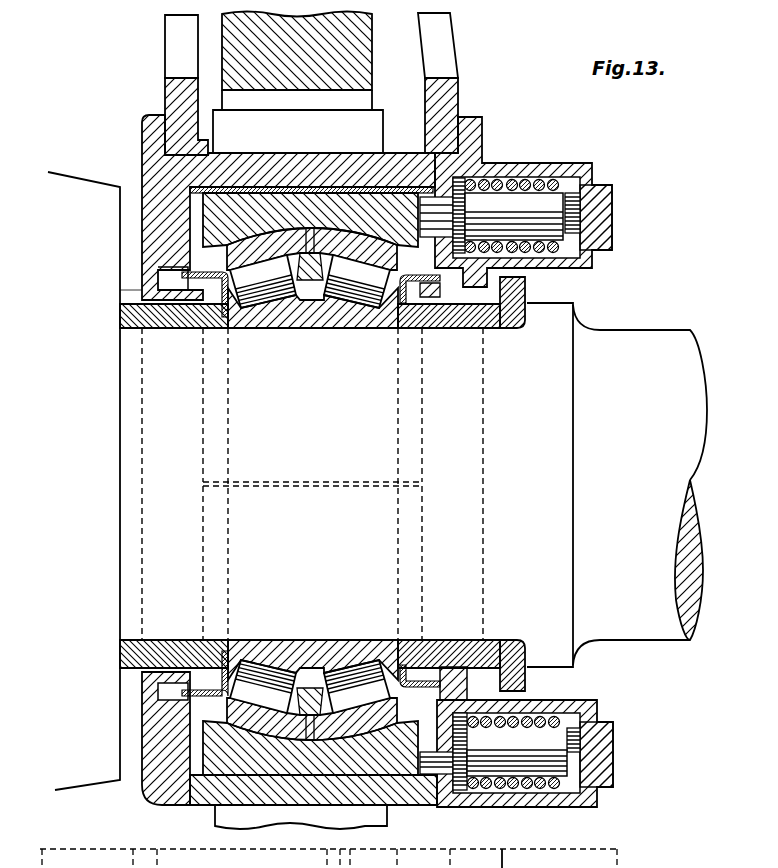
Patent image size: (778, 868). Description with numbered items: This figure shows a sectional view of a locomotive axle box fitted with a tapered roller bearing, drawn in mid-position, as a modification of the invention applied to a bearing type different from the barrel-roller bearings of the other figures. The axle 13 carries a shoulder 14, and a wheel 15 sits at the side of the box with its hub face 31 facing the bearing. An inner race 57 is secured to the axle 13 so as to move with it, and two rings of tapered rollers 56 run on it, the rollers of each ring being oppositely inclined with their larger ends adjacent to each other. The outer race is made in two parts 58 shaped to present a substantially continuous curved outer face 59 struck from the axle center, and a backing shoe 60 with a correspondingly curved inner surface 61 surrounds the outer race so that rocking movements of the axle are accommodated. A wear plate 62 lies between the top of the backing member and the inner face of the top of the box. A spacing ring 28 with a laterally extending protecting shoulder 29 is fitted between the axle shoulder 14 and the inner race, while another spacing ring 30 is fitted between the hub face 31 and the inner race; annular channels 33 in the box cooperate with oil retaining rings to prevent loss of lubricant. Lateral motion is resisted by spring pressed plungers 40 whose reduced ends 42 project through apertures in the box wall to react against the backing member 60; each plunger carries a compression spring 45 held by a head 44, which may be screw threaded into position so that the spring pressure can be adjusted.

The axle 13 is at (657, 335).
The shoulder 14 is at (553, 393).
The wheel 15 is at (70, 183).
The spacing ring 28 is at (466, 322).
The protecting shoulder 29 is at (528, 289).
The spacing ring 30 is at (176, 328).
The hub face 31 is at (118, 291).
The annular channel 33 is at (445, 670).
The spring pressed plunger 40 is at (523, 200).
The reduced end 42 is at (446, 770).
The head 44 is at (596, 205).
The compression spring 45 is at (498, 182).
The tapered roller 56 is at (268, 302).
The inner race 57 is at (313, 325).
The outer race part 58 is at (268, 232).
The curved outer face 59 is at (350, 225).
The backing shoe 60 is at (235, 205).
The curved inner surface 61 is at (172, 255).
The wear plate 62 is at (385, 190).